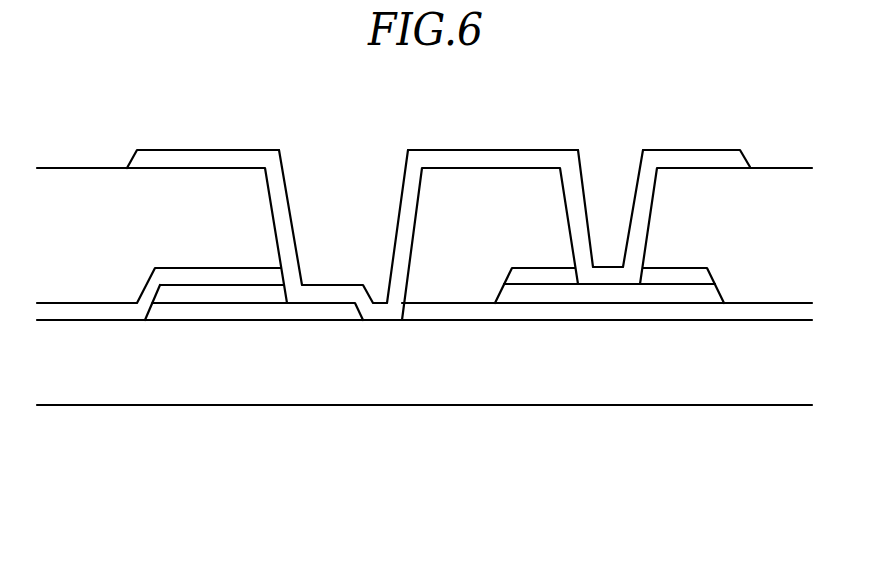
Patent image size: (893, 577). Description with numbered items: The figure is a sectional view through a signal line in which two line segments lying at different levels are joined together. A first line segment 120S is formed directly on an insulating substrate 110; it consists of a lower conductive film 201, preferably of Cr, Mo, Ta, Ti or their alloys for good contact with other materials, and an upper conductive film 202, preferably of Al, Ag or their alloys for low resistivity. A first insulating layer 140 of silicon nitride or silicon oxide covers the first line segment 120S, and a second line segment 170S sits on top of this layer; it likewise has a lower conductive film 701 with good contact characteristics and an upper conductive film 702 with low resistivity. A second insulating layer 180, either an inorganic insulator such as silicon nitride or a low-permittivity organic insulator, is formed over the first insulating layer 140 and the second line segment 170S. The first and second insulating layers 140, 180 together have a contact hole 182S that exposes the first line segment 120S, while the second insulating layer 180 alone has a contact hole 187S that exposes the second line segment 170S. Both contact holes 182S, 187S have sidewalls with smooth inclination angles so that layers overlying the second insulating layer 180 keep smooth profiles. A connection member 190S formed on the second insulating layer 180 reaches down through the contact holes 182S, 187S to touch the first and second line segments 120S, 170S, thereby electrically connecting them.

The insulating substrate 110 is at (388, 387).
The first line segment 120S is at (216, 397).
The lower conductive film 201 is at (187, 293).
The upper conductive film 202 is at (233, 312).
The first insulating layer 140 is at (647, 310).
The second line segment 170S is at (608, 388).
The lower conductive film 701 is at (528, 277).
The upper conductive film 702 is at (565, 293).
The second insulating layer 180 is at (759, 285).
The connection member 190S is at (487, 158).
The contact hole 182S is at (342, 170).
The contact hole 187S is at (610, 166).